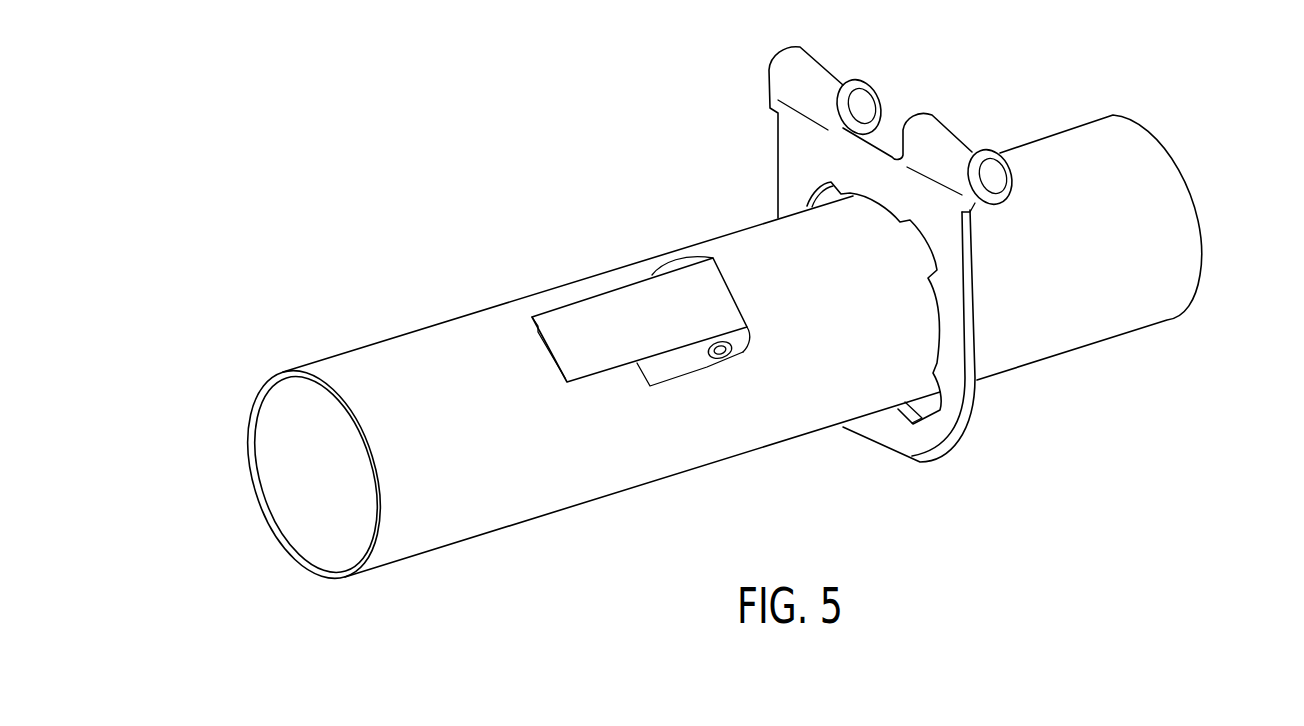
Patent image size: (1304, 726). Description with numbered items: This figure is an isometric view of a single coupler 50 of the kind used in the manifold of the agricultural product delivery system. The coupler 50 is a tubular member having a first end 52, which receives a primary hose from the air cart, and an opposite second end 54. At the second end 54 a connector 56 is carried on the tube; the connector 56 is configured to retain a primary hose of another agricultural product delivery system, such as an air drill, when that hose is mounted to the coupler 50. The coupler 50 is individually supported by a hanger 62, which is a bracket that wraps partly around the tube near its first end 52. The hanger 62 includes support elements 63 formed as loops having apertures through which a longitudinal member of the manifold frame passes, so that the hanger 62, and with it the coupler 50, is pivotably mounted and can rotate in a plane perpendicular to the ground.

The coupler 50 is at (549, 396).
The first end 52 is at (1222, 193).
The second end 54 is at (220, 510).
The connector 56 is at (628, 310).
The hanger 62 is at (858, 254).
The support element 63 is at (822, 90).